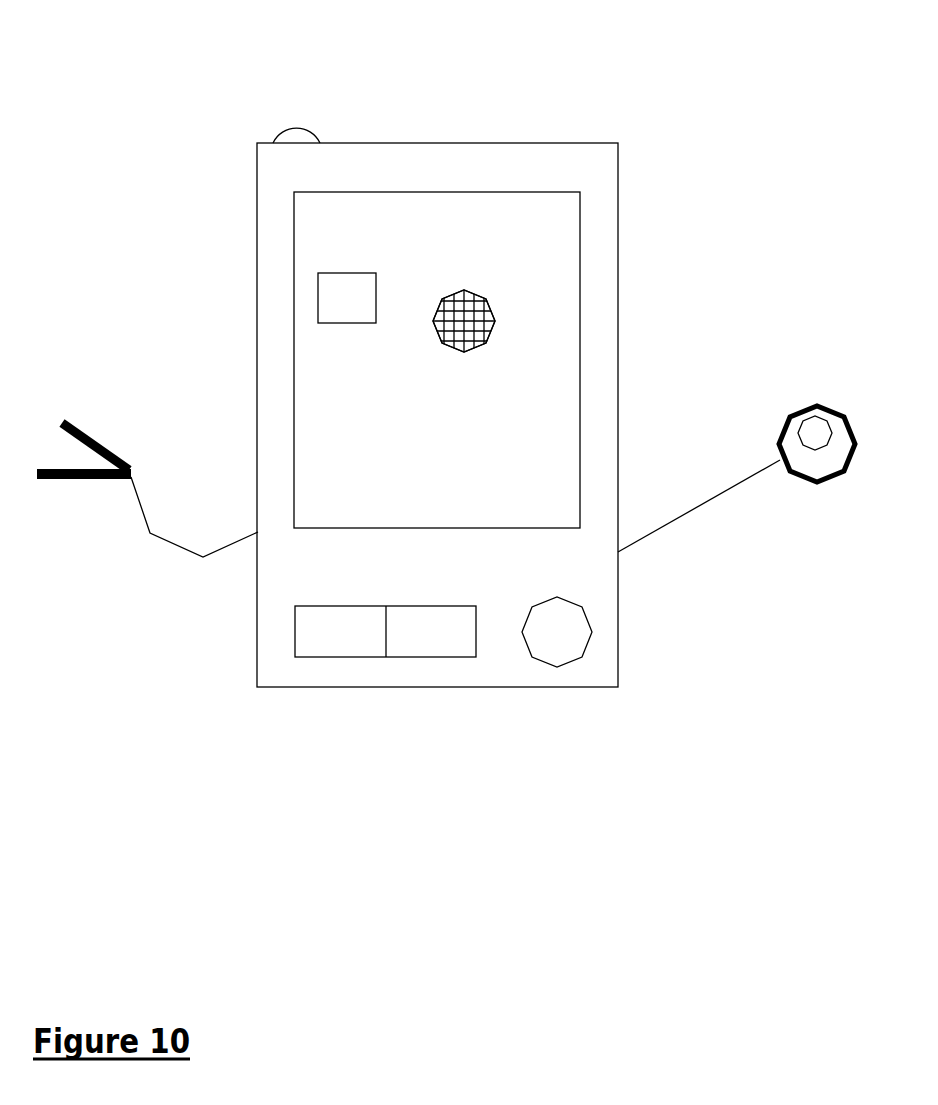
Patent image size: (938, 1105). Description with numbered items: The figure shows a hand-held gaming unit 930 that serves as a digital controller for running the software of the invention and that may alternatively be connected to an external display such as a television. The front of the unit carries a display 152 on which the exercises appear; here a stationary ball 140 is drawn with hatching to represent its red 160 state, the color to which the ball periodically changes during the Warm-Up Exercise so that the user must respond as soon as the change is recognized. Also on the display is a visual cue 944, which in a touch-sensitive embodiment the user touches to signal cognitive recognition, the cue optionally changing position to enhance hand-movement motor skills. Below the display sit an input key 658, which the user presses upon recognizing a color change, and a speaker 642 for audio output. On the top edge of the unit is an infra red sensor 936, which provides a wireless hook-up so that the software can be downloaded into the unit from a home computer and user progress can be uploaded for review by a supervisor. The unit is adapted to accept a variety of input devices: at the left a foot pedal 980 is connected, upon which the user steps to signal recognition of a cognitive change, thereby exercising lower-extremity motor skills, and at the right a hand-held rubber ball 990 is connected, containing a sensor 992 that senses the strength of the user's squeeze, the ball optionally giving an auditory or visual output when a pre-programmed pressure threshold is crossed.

The stationary ball 140 is at (449, 185).
The display 152 is at (563, 359).
The red 160 is at (579, 258).
The speaker 642 is at (637, 631).
The input key 658 is at (358, 701).
The hand-held gaming unit 930 is at (490, 415).
The infra red sensor 936 is at (249, 94).
The visual cue 944 is at (250, 270).
The foot pedal 980 is at (80, 428).
The hand-held rubber ball 990 is at (792, 475).
The sensor 992 is at (782, 395).